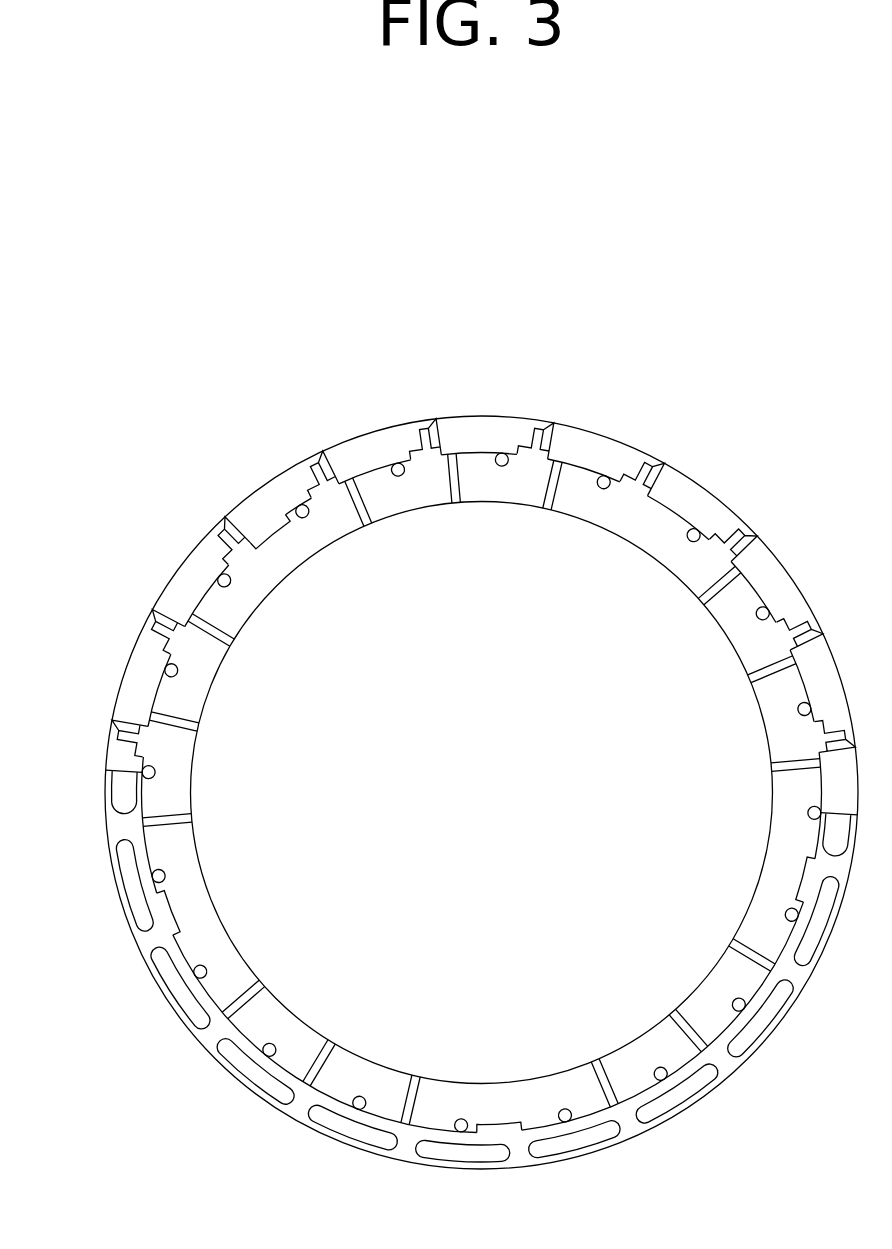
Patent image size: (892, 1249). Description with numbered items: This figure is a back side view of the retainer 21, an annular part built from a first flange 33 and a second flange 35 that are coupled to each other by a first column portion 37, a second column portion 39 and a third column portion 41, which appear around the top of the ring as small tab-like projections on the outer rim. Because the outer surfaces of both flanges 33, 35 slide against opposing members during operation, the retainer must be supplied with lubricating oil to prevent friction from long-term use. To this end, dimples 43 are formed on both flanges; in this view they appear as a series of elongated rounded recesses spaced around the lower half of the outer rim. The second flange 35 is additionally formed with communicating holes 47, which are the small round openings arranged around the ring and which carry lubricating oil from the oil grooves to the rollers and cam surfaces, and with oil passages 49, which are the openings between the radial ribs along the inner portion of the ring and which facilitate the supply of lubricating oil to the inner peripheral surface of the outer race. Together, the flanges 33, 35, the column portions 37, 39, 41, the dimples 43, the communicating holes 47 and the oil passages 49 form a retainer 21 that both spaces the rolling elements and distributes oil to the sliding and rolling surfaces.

The retainer 21 is at (173, 484).
The first flange 33 is at (146, 1006).
The second flange 35 is at (737, 960).
The first column portion 37 is at (652, 468).
The second column portion 39 is at (436, 424).
The third column portion 41 is at (322, 457).
The dimples 43 is at (118, 893).
The communicating holes 47 is at (672, 1078).
The oil passages 49 is at (681, 1010).